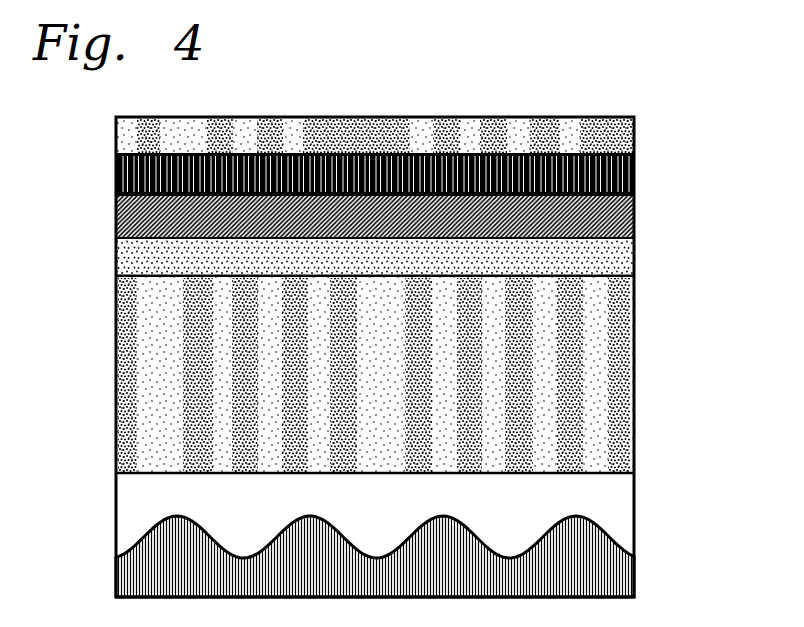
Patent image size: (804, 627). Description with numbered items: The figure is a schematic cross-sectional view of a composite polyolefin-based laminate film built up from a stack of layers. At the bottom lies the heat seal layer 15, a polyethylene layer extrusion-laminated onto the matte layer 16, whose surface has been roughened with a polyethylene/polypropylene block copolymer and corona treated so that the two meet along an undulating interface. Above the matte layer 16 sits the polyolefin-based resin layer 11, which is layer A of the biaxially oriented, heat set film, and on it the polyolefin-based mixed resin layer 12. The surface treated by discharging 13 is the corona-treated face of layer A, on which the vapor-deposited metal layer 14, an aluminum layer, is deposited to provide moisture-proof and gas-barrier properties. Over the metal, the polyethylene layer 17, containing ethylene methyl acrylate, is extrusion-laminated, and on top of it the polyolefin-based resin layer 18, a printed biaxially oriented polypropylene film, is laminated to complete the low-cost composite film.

The polyolefin-based resin layer 11 is at (636, 392).
The polyolefin-based mixed resin layer 12 is at (636, 267).
The surface treated by discharging 13 is at (636, 238).
The vapor-deposited metal layer 14 is at (636, 208).
The heat seal layer 15 is at (636, 572).
The matte layer 16 is at (636, 497).
The polyethylene layer 17 is at (636, 168).
The polyolefin-based resin layer 18 is at (322, 117).